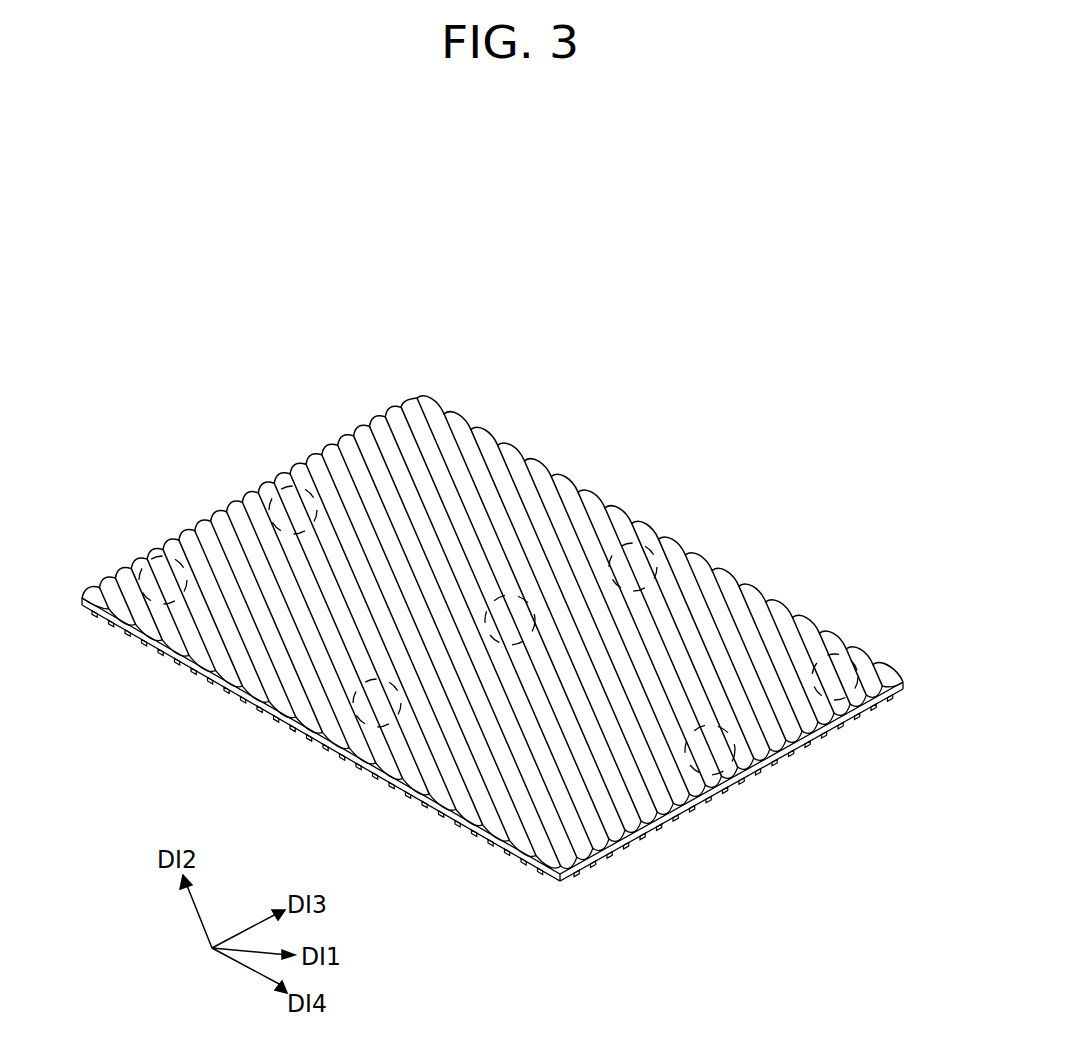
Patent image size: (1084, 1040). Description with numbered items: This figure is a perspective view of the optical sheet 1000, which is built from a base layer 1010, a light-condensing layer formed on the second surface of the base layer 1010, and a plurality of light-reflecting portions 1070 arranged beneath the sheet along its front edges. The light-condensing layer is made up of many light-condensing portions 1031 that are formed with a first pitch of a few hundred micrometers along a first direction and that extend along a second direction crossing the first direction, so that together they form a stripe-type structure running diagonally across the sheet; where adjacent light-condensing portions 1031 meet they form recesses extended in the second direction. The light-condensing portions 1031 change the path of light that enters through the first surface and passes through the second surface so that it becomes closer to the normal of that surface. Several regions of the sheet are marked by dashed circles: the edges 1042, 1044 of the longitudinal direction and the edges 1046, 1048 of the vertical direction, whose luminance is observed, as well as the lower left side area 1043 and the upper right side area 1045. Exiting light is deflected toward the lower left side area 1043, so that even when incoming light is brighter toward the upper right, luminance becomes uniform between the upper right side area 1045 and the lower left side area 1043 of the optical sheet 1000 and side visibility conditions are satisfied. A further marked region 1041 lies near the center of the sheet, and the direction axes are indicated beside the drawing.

The optical sheet 1000 is at (530, 280).
The base layer 1010 is at (137, 641).
The light-reflecting portions 1070 is at (192, 675).
The light-condensing portions 1031 is at (260, 702).
The first region 1041 is at (505, 596).
The edge of the longitudinal direction 1042 is at (757, 777).
The lower left side area 1043 is at (150, 555).
The edge of the longitudinal direction 1044 is at (273, 482).
The upper right side area 1045 is at (848, 655).
The edge of the vertical direction 1046 is at (648, 532).
The edge of the vertical direction 1048 is at (365, 722).